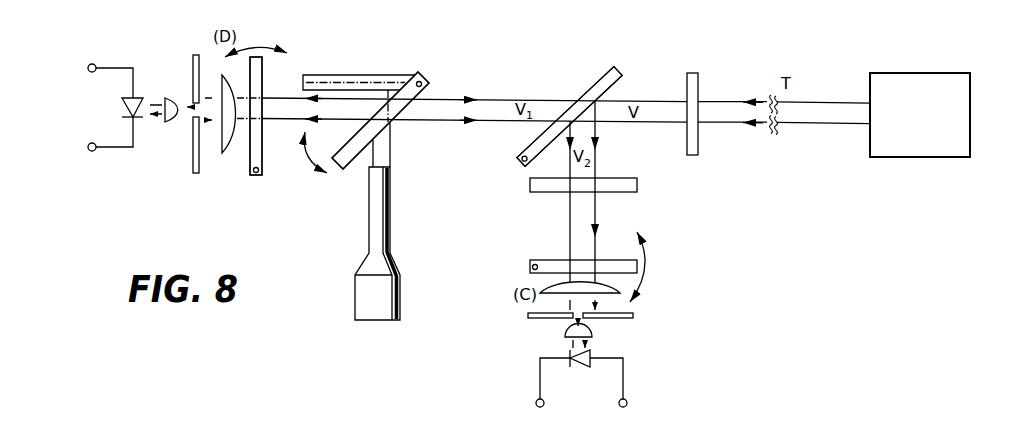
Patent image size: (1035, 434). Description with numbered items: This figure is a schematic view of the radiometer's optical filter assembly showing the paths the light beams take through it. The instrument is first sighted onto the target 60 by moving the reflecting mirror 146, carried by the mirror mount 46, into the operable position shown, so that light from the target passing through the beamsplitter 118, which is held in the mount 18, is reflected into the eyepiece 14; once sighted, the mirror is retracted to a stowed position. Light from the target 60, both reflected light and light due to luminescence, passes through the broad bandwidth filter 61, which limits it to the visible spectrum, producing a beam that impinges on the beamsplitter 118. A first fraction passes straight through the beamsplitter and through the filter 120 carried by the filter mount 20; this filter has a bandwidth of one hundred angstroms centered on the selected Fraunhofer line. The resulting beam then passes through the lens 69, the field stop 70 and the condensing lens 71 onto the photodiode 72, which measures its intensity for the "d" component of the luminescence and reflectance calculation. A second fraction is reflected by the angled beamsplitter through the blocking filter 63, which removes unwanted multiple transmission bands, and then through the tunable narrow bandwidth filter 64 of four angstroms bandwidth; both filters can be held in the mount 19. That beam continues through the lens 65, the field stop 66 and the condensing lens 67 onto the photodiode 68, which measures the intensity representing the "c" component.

The photodiode 72 is at (122, 103).
The condensing lens 71 is at (175, 125).
The field stop 70 is at (192, 54).
The lens 69 is at (222, 135).
The filter mount 20 is at (263, 71).
The filter 120 is at (262, 130).
The mirror mount 46 is at (352, 169).
The reflecting mirror 146 is at (388, 118).
The eyepiece 14 is at (368, 292).
The mount 18 is at (620, 70).
The beamsplitter 118 is at (577, 112).
The blocking filter 63 is at (630, 177).
The broad bandwidth filter 61 is at (695, 73).
The target 60 is at (971, 95).
The narrow bandwidth filter 64 is at (548, 260).
The mount 19 is at (641, 262).
The field stop 66 is at (528, 316).
The lens 65 is at (633, 312).
The condensing lens 67 is at (565, 331).
The photodiode 68 is at (592, 369).